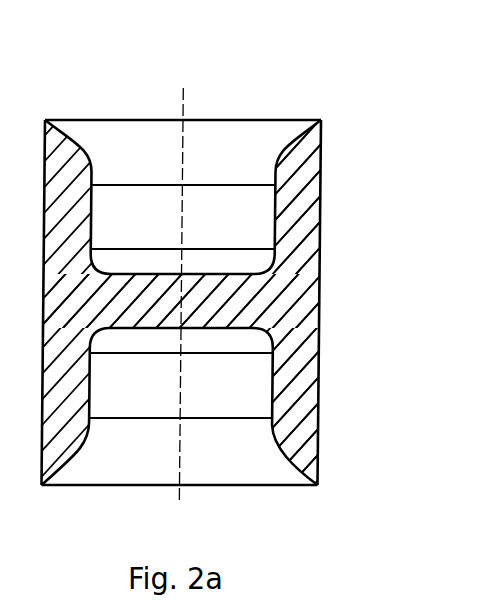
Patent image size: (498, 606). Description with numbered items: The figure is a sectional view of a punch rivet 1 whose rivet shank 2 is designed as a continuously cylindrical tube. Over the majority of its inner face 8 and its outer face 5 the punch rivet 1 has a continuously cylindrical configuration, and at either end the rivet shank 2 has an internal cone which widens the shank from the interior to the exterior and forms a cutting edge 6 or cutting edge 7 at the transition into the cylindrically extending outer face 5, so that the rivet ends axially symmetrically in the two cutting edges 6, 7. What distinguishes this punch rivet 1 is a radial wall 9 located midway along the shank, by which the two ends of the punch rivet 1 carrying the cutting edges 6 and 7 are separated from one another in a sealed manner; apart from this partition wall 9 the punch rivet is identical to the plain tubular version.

The punch rivet 1 is at (249, 273).
The rivet shank 2 is at (304, 362).
The outer face 5 is at (321, 297).
The cutting edge 6 is at (321, 485).
The cutting edge 7 is at (321, 120).
The inner face 8 is at (96, 205).
The radial wall 9 is at (222, 300).